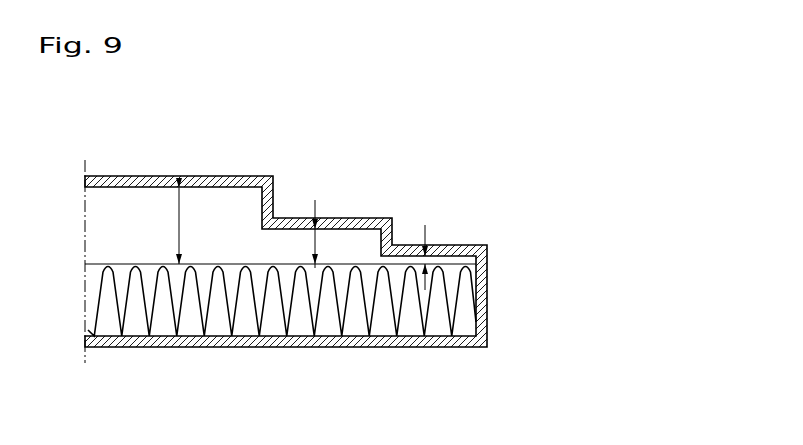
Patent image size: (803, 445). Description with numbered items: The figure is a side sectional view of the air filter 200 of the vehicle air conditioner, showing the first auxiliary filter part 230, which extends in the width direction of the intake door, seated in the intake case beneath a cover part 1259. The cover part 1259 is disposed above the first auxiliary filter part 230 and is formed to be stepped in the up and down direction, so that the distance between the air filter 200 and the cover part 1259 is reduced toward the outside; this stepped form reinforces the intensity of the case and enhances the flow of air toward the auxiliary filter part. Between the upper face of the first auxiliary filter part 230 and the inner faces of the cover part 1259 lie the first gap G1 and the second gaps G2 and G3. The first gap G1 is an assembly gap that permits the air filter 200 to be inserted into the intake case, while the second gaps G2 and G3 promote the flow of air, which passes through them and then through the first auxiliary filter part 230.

The cover part 1259 is at (360, 215).
The first auxiliary filter part 230 is at (363, 305).
The air filter 200 is at (280, 343).
The first gap G1 is at (427, 258).
The second gap G2 is at (328, 234).
The second gap G3 is at (193, 226).